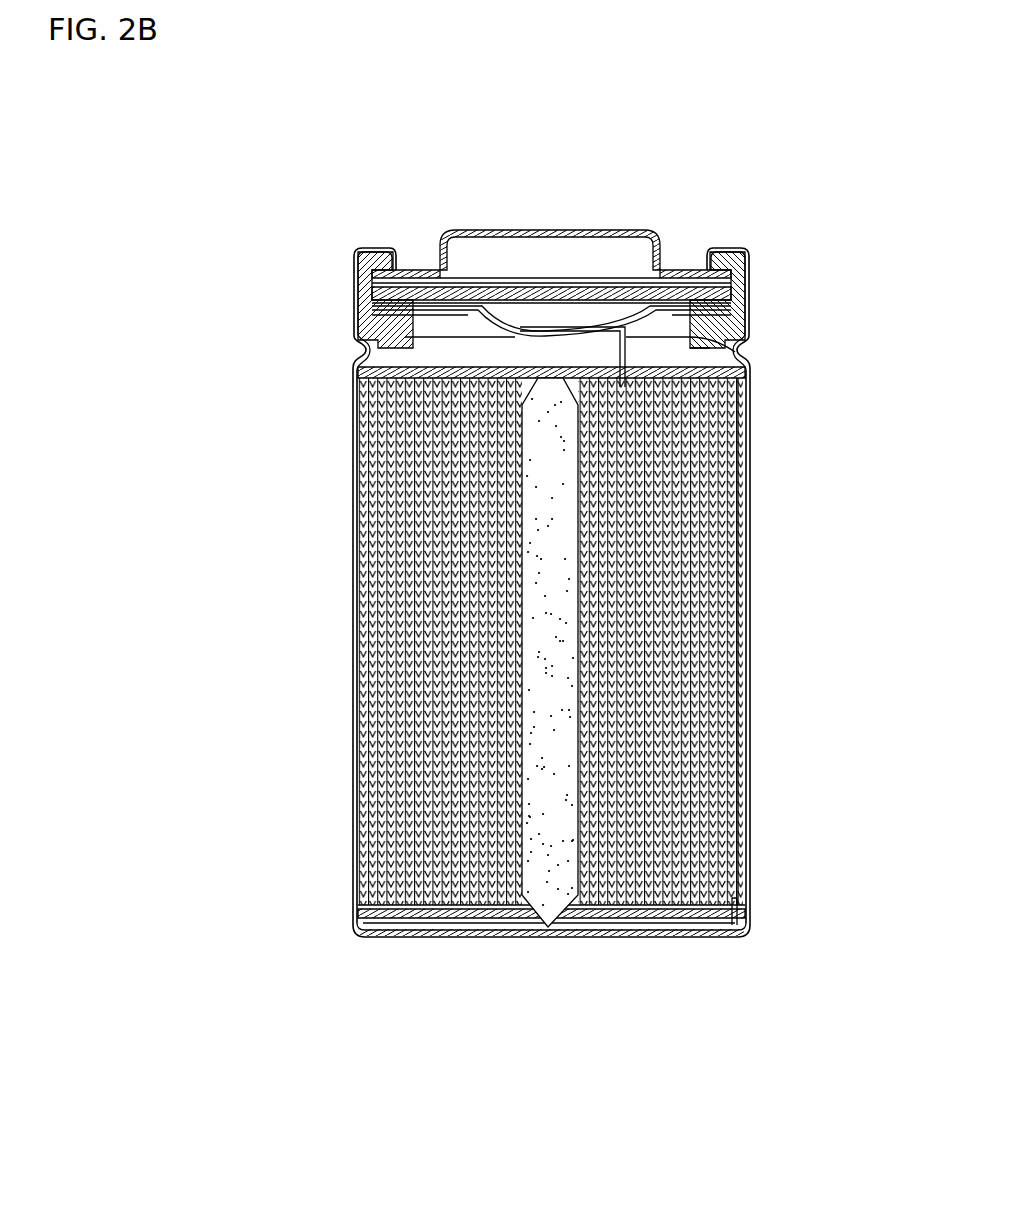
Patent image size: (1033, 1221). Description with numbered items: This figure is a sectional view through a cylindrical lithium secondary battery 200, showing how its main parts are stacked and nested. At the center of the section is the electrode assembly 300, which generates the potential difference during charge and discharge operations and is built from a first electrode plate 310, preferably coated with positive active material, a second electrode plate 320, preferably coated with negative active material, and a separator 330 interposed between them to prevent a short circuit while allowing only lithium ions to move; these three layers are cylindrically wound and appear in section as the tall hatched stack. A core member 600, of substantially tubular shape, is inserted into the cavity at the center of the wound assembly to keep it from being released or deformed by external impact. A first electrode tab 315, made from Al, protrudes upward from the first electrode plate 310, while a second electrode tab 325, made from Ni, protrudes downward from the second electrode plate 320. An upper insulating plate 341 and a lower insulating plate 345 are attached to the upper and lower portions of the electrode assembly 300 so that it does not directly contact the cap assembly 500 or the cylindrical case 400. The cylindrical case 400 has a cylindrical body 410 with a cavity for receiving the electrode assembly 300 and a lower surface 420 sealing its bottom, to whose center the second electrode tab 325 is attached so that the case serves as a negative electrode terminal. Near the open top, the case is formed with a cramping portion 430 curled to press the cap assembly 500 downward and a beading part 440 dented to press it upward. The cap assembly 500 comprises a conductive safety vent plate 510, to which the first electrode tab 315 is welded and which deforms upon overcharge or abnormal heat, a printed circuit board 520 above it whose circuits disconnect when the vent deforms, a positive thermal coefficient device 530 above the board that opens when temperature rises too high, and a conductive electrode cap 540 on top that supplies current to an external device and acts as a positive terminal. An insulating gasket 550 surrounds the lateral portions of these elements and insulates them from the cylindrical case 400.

The cylindrical lithium secondary battery 200 is at (785, 205).
The electrode assembly 300 is at (868, 350).
The first electrode plate 310 is at (748, 500).
The first electrode tab 315 is at (740, 350).
The second electrode plate 320 is at (748, 420).
The second electrode tab 325 is at (645, 938).
The separator 330 is at (748, 466).
The upper insulating plate 341 is at (745, 364).
The lower insulating plate 345 is at (760, 928).
The cylindrical case 400 is at (230, 322).
The cylindrical body 410 is at (352, 416).
The lower surface 420 is at (390, 952).
The cramping portion 430 is at (352, 248).
The beading part 440 is at (356, 351).
The cap assembly 500 is at (465, 143).
The safety vent plate 510 is at (519, 320).
The printed circuit board 520 is at (584, 300).
The positive thermal coefficient device 530 is at (628, 285).
The electrode cap 540 is at (470, 230).
The insulating gasket 550 is at (716, 248).
The core member 600 is at (538, 927).